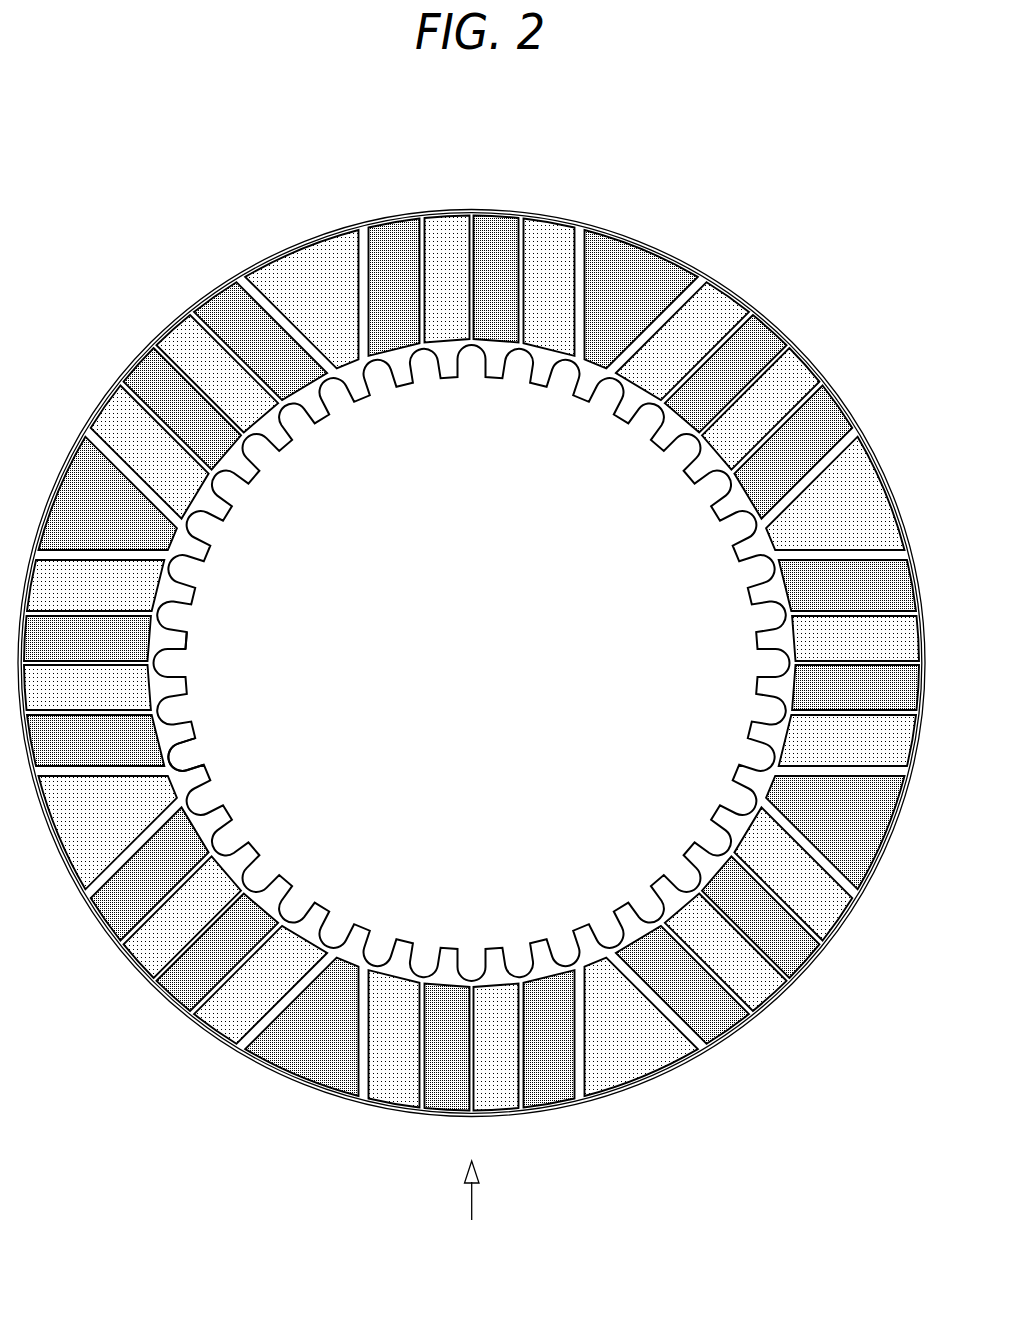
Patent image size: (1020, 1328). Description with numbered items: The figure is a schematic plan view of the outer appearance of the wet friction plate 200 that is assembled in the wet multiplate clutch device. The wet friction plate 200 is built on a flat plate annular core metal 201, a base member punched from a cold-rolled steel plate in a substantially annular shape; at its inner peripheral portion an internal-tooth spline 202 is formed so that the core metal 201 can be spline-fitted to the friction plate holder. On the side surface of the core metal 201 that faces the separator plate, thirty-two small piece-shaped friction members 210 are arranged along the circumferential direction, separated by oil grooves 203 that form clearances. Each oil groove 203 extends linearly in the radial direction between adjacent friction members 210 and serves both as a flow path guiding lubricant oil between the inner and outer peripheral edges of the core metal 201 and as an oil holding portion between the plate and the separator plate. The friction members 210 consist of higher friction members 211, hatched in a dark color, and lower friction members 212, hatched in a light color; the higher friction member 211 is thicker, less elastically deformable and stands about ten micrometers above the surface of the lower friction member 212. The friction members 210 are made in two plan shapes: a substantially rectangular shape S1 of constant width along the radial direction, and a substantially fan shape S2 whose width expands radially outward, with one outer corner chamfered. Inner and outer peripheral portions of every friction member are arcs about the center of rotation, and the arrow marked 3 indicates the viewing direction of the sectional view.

The wet friction plate 200 is at (162, 139).
The core metal 201 is at (190, 641).
The internal-tooth spline 202 is at (200, 762).
The oil groove 203 is at (852, 438).
The friction member 210 is at (527, 140).
The higher friction member 211 is at (495, 219).
The lower friction member 212 is at (447, 219).
The first shape S1 is at (212, 284).
The second shape S2 is at (266, 257).
The section arrow for FIG. 3 is at (472, 1205).